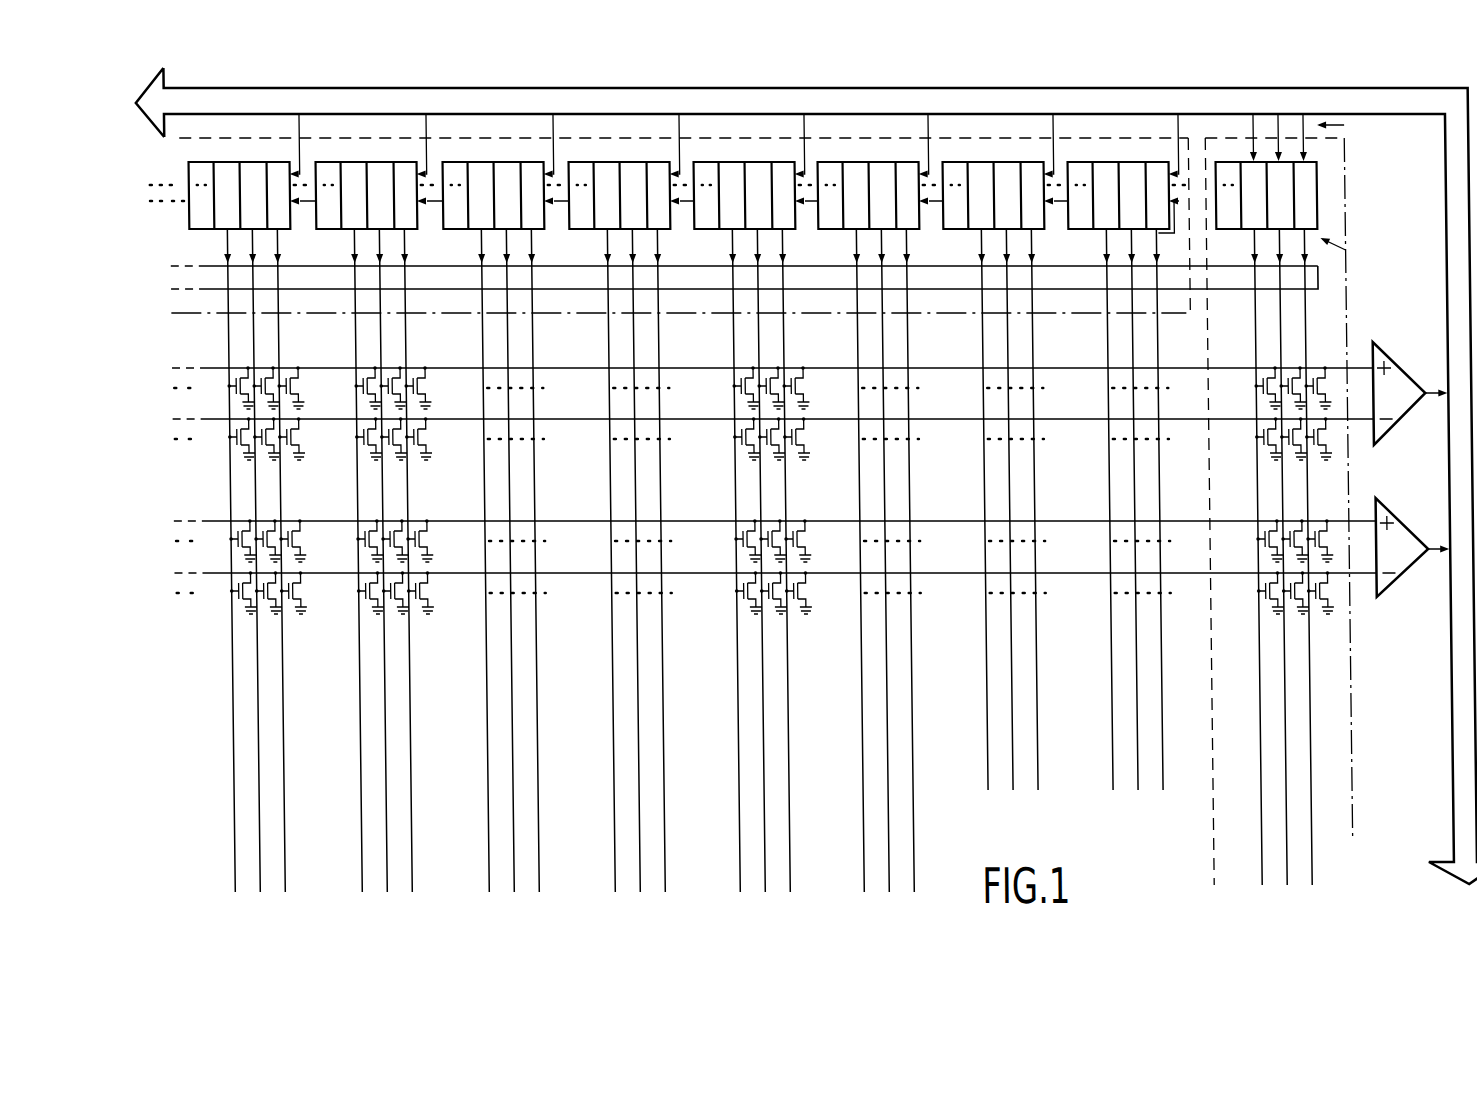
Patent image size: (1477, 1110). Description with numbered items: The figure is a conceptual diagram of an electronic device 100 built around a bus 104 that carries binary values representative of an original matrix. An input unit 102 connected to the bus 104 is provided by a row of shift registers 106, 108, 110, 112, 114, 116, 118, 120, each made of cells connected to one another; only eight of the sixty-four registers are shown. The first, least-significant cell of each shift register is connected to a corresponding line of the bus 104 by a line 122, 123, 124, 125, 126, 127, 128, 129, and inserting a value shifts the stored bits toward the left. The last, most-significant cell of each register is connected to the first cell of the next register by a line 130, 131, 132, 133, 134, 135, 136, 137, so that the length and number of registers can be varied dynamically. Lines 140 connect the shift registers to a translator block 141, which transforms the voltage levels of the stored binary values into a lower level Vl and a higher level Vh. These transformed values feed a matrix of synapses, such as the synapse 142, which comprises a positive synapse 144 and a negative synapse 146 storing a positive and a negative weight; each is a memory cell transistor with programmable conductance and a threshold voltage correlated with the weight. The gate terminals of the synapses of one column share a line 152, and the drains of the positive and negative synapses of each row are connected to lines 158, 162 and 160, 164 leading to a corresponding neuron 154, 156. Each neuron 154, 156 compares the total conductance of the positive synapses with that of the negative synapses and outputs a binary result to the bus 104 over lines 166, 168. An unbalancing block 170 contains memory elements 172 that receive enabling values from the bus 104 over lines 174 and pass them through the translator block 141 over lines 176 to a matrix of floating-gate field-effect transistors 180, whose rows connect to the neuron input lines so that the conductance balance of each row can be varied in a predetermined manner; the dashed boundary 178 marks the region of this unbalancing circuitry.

The electronic device 100 is at (760, 576).
The input unit 102 is at (1176, 313).
The bus 104 is at (1346, 92).
The shift register 106 is at (1130, 162).
The shift register 108 is at (1005, 162).
The shift register 110 is at (882, 162).
The shift register 112 is at (757, 162).
The shift register 114 is at (634, 162).
The shift register 116 is at (505, 162).
The shift register 118 is at (378, 162).
The shift register 120 is at (255, 162).
The line 122 is at (1181, 151).
The line 123 is at (1056, 151).
The line 124 is at (931, 151).
The line 125 is at (807, 151).
The line 126 is at (682, 151).
The line 127 is at (556, 129).
The line 128 is at (436, 153).
The line 129 is at (310, 153).
The line 130 is at (1179, 232).
The line 131 is at (1057, 207).
The line 132 is at (933, 207).
The line 133 is at (808, 207).
The line 134 is at (684, 207).
The line 135 is at (558, 207).
The line 136 is at (431, 207).
The line 137 is at (303, 207).
The lines 140 is at (212, 250).
The translator block 141 is at (1317, 272).
The synapse 142 is at (820, 372).
The positive synapse 144 is at (801, 381).
The negative synapse 146 is at (807, 437).
The line 152 is at (212, 345).
The neuron 154 is at (1400, 394).
The neuron 156 is at (1403, 565).
The line 158 is at (1355, 359).
The line 160 is at (1362, 430).
The line 162 is at (1378, 490).
The line 164 is at (1357, 583).
The line 166 is at (1430, 400).
The line 168 is at (1433, 549).
The unbalancing block 170 is at (1345, 165).
The memory element 172 is at (1317, 202).
The lines 174 is at (1345, 125).
The lines 176 is at (1345, 250).
The boundary line 178 is at (1248, 306).
The floating-gate field-effect transistors 180 is at (1243, 598).